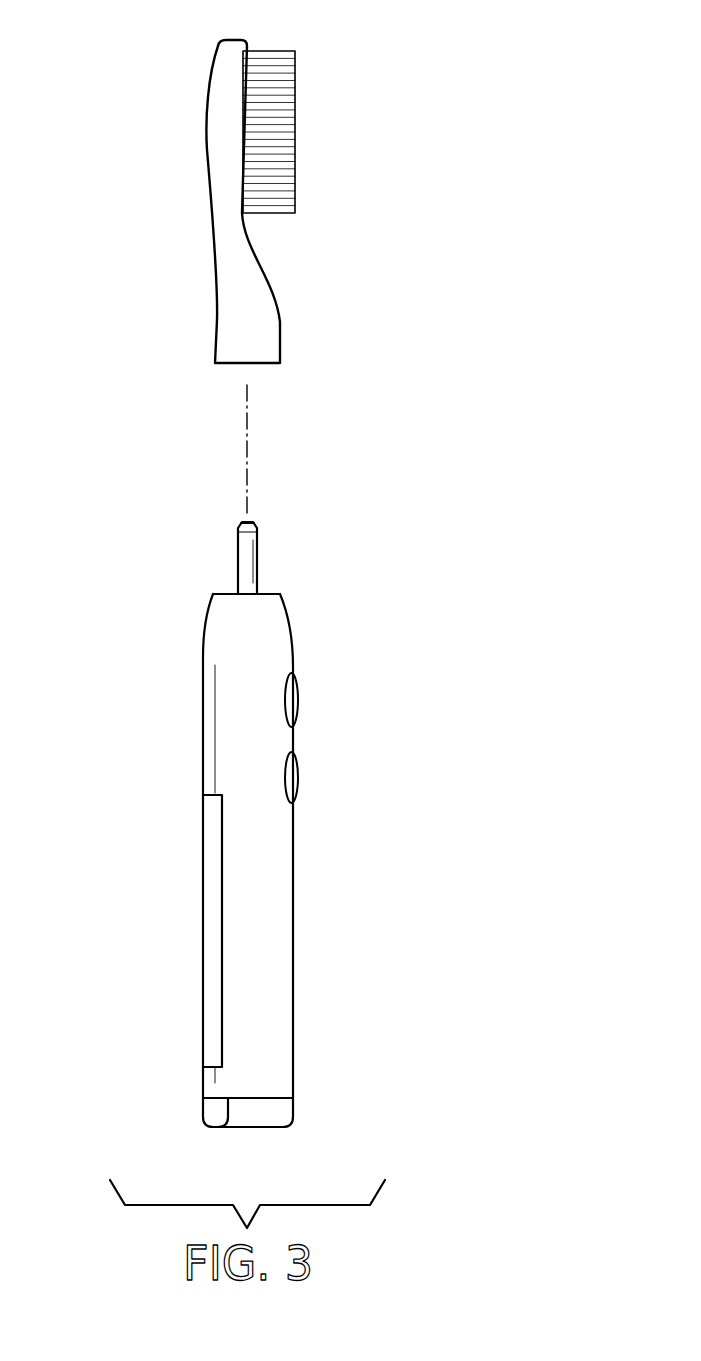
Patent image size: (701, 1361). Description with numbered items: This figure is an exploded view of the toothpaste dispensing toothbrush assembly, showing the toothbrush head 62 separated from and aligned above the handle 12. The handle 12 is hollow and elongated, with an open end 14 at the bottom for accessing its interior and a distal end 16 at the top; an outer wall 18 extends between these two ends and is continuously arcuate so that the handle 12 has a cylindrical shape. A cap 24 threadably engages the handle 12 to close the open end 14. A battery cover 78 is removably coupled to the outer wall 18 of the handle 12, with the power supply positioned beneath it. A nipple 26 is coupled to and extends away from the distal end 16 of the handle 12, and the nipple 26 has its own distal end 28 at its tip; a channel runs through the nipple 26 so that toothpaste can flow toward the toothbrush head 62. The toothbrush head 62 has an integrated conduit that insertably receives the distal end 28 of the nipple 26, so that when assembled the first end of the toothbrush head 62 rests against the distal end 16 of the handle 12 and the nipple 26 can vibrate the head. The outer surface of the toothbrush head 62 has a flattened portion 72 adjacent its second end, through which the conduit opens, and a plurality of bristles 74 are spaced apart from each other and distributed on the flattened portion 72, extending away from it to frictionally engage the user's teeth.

The toothbrush head 62 is at (209, 105).
The flattened portion 72 is at (247, 100).
The bristles 74 is at (295, 130).
The distal end of the nipple 28 is at (245, 518).
The nipple 26 is at (258, 555).
The distal end of the handle 16 is at (225, 593).
The handle 12 is at (203, 706).
The outer wall 18 is at (272, 918).
The battery cover 78 is at (222, 857).
The cap 24 is at (270, 1129).
The open end 14 is at (208, 1128).